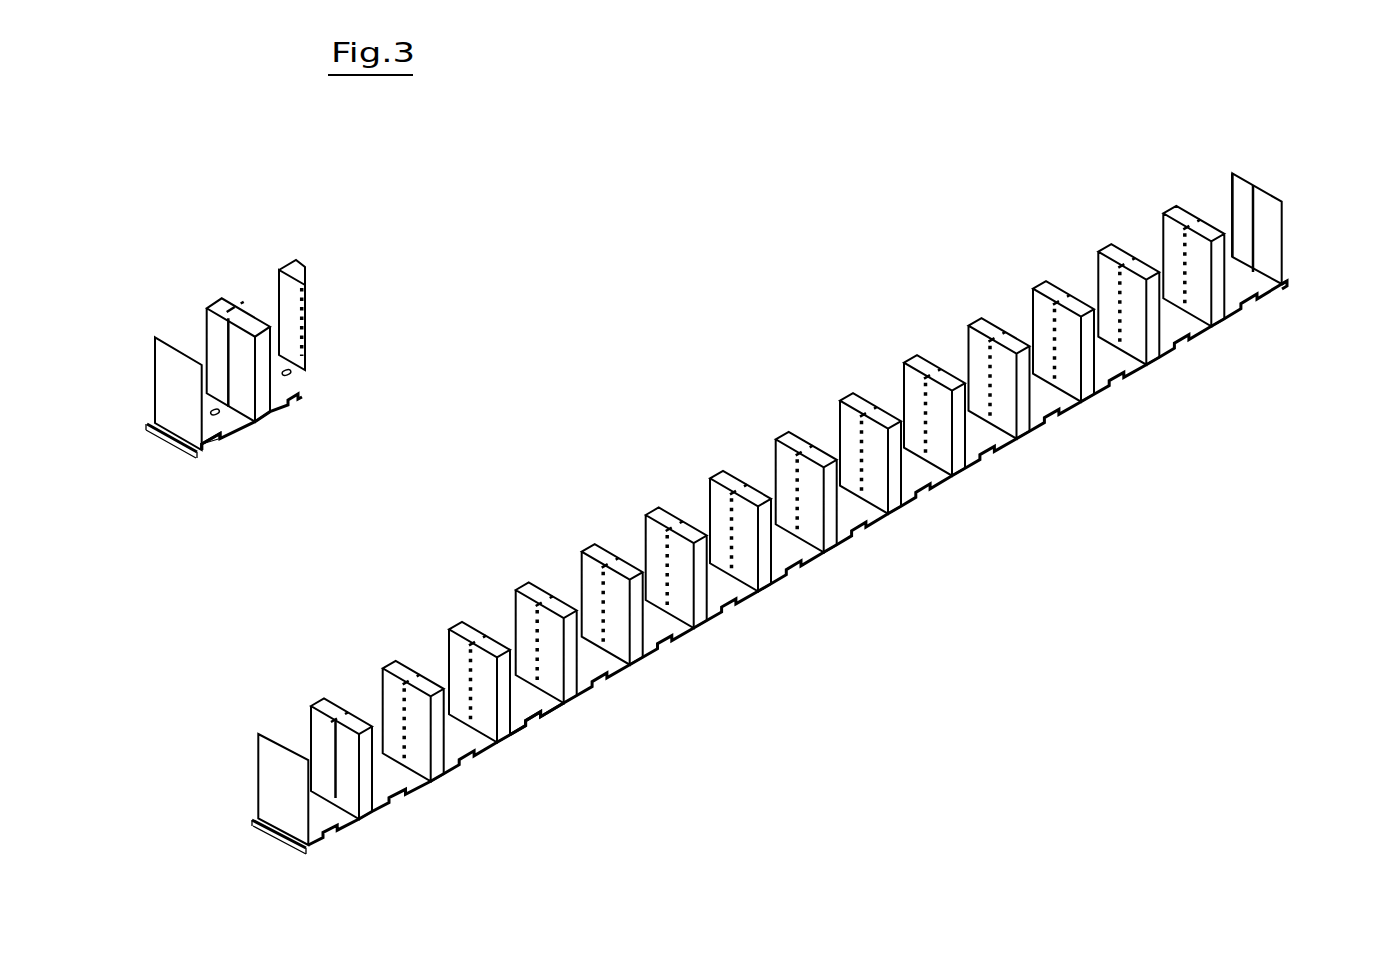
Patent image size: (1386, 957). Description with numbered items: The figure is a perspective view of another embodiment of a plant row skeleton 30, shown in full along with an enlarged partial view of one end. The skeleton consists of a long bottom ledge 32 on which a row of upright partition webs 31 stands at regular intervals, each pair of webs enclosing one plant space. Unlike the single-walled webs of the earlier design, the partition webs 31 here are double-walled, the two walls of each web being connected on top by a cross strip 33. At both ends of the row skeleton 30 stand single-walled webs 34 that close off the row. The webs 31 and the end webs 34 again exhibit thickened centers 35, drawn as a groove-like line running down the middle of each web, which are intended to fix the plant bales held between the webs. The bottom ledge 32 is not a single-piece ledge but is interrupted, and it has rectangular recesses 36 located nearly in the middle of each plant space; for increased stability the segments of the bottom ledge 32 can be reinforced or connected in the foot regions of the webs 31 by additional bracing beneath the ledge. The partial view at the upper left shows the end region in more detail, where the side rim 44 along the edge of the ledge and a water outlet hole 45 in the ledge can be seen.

The row skeleton 30 is at (547, 377).
The partition web 31 is at (677, 587).
The bottom ledge 32 is at (783, 543).
The cross strip 33 is at (463, 620).
The single-walled web 34 is at (280, 807).
The thickened center 35 is at (927, 430).
The rectangular recess 36 is at (533, 713).
The side rim 44 is at (205, 447).
The water outlet hole 45 is at (291, 376).